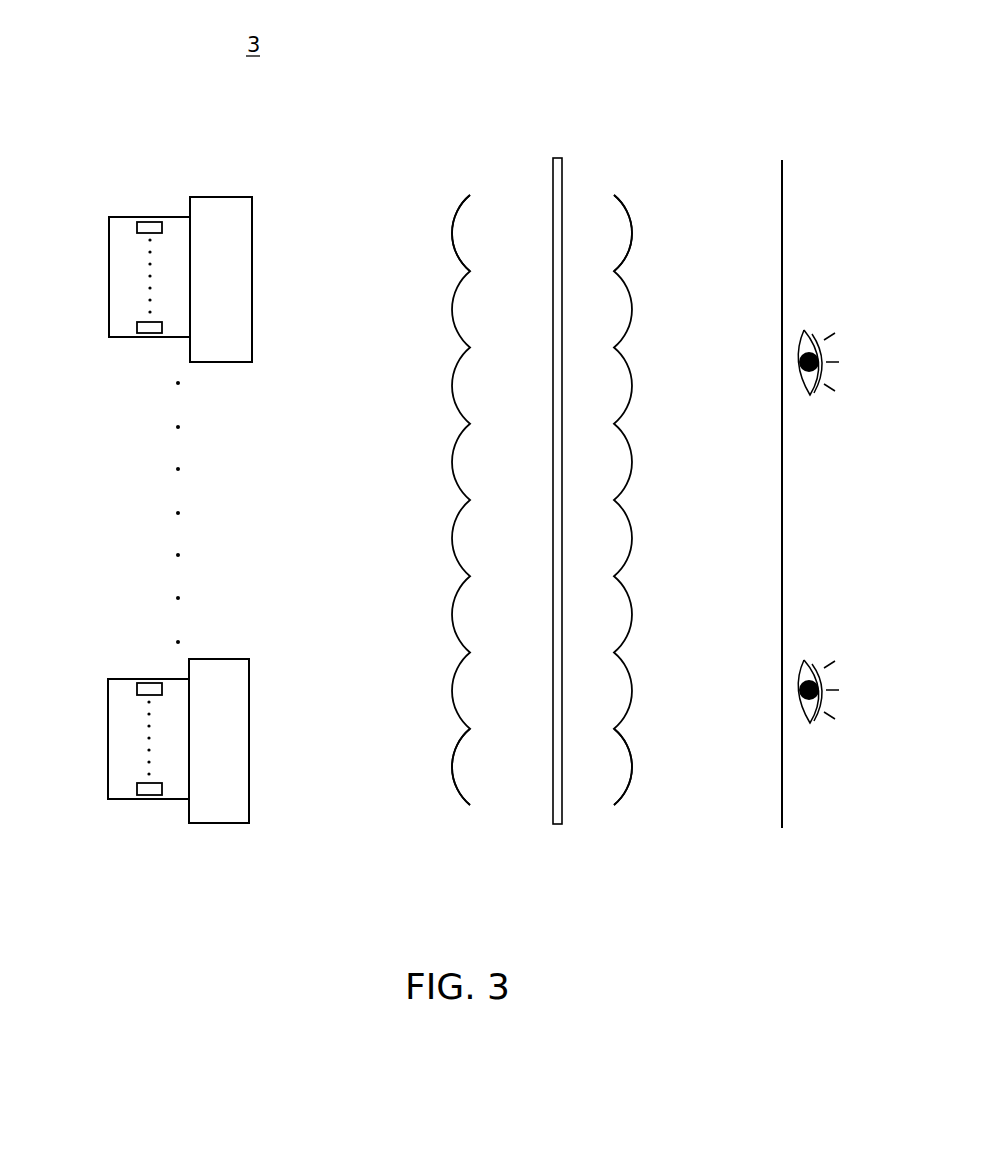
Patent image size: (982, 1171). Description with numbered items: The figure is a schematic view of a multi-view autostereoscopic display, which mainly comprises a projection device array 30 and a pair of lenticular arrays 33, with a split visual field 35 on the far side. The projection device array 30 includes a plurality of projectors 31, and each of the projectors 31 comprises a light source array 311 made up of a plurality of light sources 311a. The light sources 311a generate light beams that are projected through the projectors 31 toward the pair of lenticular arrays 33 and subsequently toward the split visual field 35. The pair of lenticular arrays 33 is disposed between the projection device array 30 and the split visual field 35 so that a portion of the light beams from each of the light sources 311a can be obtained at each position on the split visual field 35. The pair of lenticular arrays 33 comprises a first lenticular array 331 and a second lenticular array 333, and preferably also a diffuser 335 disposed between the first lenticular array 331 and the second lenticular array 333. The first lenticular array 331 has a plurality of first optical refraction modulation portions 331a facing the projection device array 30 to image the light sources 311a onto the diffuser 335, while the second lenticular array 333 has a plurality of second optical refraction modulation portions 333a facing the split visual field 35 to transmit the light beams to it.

The projection device array 30 is at (110, 197).
The projector 31 is at (235, 278).
The light source array 311 is at (178, 236).
The light source 311a is at (150, 328).
The pair of lenticular arrays 33 is at (582, 147).
The first lenticular array 331 is at (367, 220).
The first optical refraction modulation portion 331a is at (452, 232).
The second lenticular array 333 is at (708, 230).
The second optical refraction modulation portion 333a is at (633, 229).
The diffuser 335 is at (568, 815).
The split visual field 35 is at (783, 184).